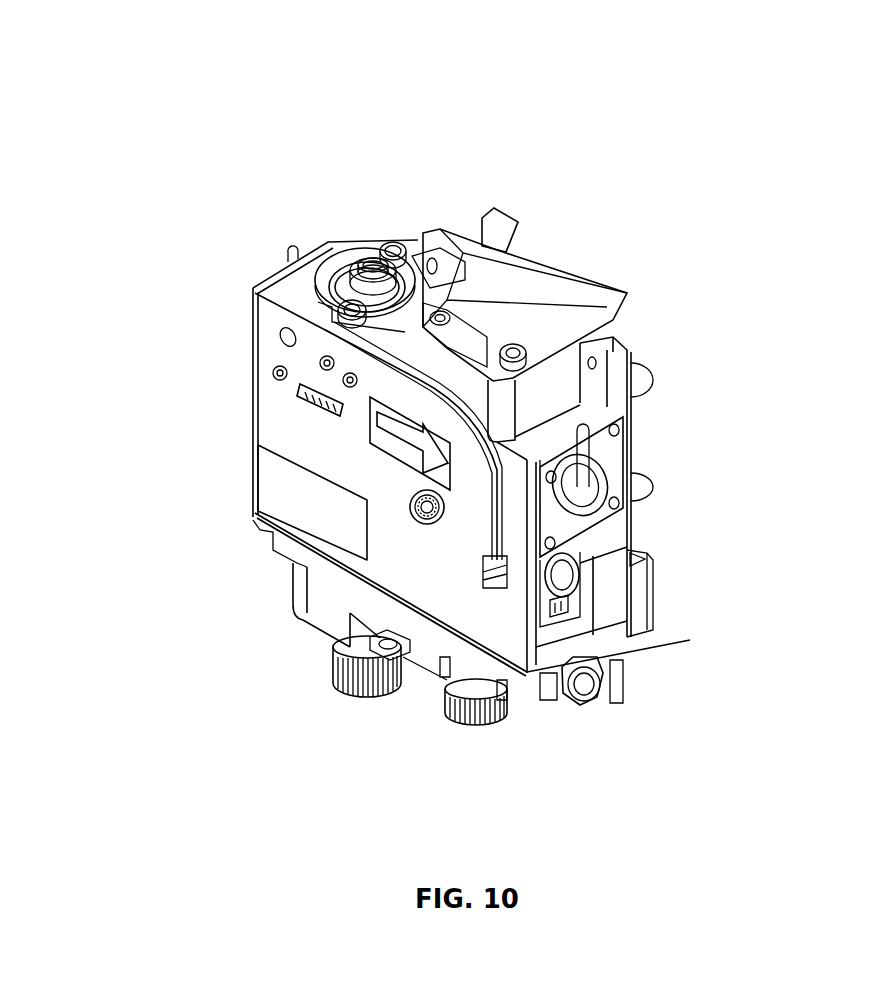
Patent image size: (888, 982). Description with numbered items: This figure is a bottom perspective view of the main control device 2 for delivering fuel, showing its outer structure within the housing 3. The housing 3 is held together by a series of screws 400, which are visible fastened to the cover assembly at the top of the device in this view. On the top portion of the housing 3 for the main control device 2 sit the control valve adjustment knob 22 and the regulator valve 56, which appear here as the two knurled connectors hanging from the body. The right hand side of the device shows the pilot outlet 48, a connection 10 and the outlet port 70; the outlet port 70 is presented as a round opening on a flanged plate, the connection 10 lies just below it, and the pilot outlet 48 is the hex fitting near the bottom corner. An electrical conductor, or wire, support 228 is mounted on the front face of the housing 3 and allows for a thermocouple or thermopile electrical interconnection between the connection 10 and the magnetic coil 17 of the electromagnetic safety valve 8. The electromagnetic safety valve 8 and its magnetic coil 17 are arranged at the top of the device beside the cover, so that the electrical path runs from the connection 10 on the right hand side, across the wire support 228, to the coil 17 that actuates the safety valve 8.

The main control device 2 is at (575, 192).
The housing 3 is at (272, 286).
The electromagnetic safety valve 8 is at (340, 280).
The magnetic coil 17 is at (322, 307).
The screws 400 is at (335, 308).
The electrical conductor support 228 is at (385, 355).
The outlet port 70 is at (572, 492).
The connection 10 is at (565, 575).
The pilot outlet 48 is at (585, 680).
The control valve adjustment knob 22 is at (358, 695).
The regulator valve 56 is at (490, 716).